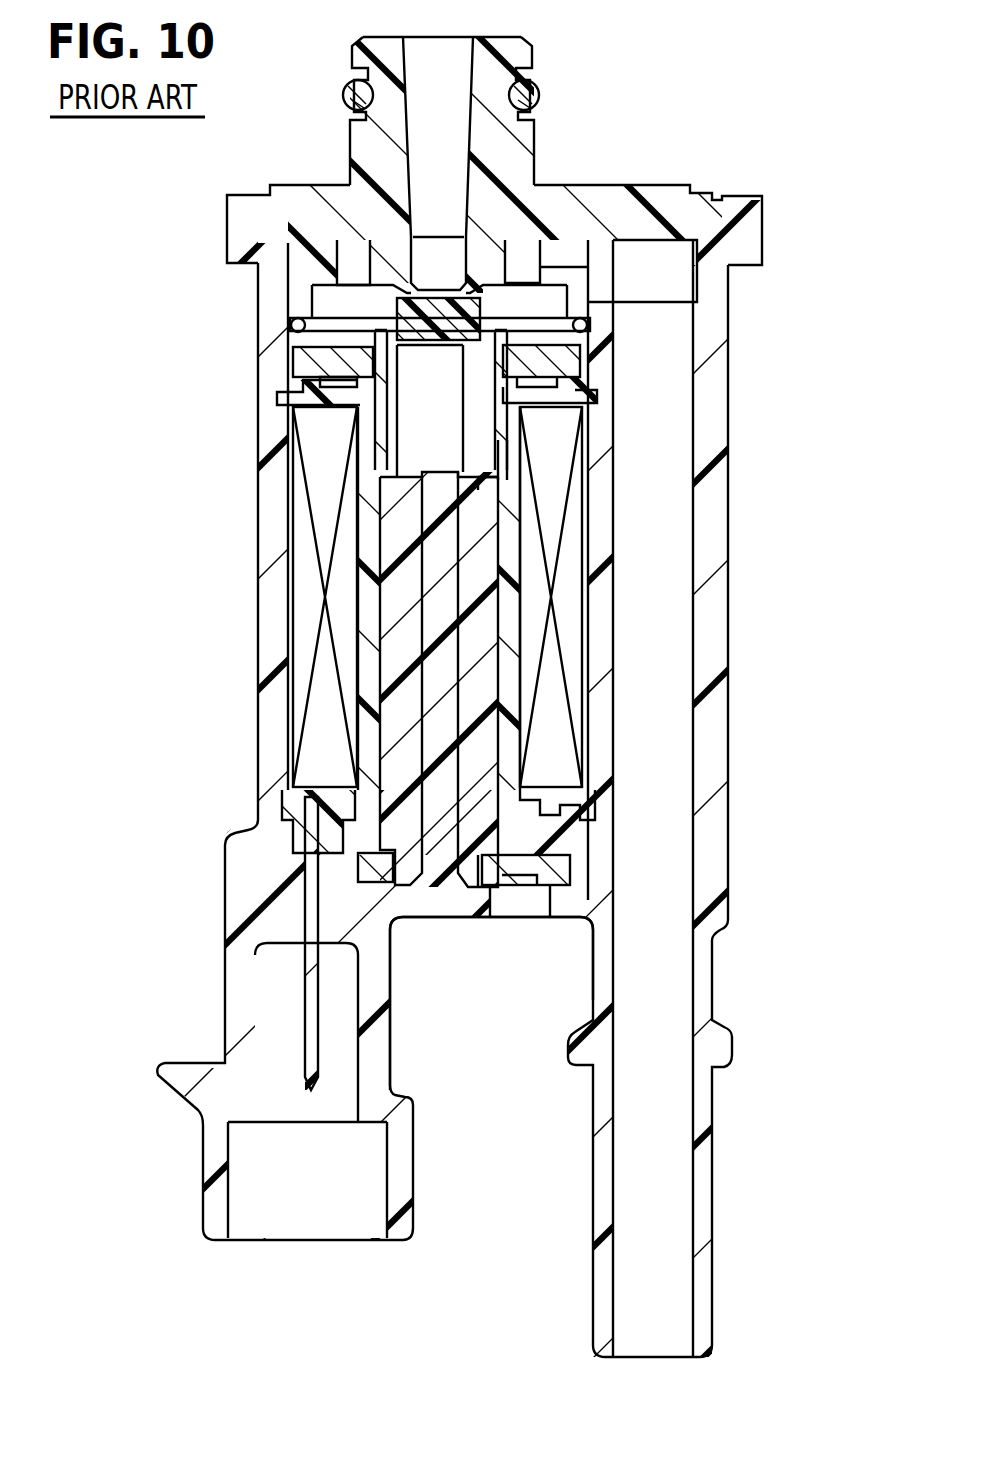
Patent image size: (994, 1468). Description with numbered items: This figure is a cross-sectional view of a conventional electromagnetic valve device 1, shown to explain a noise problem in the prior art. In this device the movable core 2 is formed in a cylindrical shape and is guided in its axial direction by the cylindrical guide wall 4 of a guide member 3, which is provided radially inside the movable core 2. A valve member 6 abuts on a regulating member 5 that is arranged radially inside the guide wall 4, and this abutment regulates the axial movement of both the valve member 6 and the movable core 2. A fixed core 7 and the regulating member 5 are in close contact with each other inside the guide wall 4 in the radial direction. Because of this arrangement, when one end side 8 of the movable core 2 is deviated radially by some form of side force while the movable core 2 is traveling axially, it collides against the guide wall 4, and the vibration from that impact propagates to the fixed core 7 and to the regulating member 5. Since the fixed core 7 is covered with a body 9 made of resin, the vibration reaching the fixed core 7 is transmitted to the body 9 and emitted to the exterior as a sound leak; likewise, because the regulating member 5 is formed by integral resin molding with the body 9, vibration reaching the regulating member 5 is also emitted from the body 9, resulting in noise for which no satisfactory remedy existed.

The electromagnetic valve device 1 is at (752, 176).
The movable core 2 is at (498, 430).
The guide member 3 is at (500, 482).
The guide wall 4 is at (375, 462).
The regulating member 5 is at (427, 377).
The valve member 6 is at (483, 299).
The fixed core 7 is at (477, 597).
The one end side 8 is at (497, 464).
The body 9 is at (447, 893).